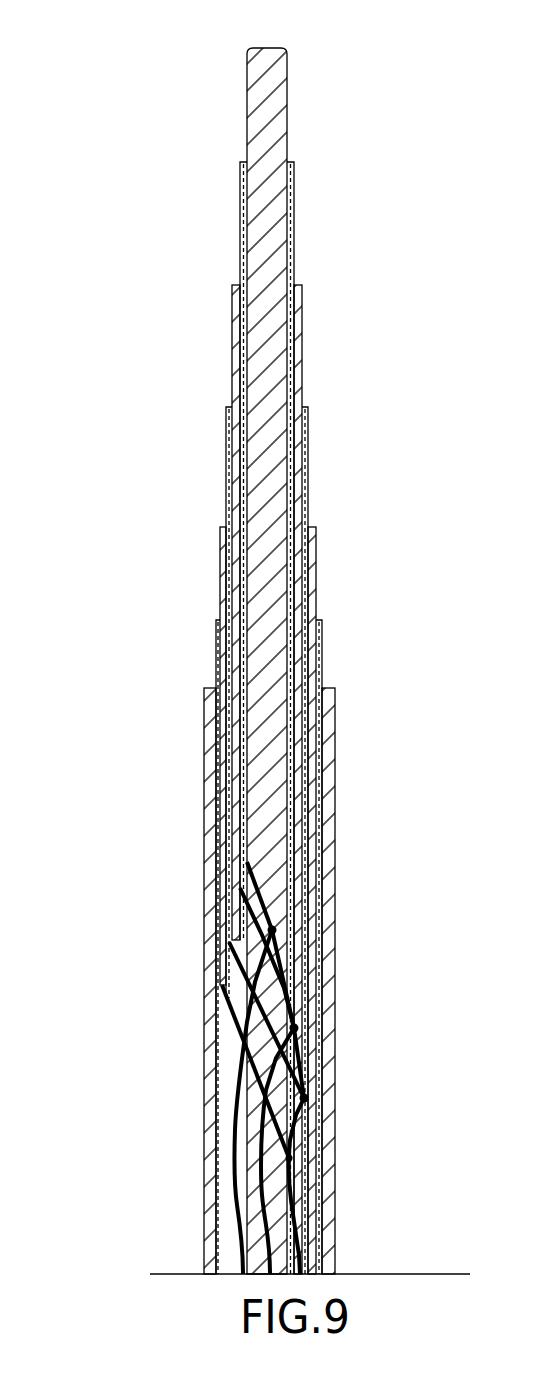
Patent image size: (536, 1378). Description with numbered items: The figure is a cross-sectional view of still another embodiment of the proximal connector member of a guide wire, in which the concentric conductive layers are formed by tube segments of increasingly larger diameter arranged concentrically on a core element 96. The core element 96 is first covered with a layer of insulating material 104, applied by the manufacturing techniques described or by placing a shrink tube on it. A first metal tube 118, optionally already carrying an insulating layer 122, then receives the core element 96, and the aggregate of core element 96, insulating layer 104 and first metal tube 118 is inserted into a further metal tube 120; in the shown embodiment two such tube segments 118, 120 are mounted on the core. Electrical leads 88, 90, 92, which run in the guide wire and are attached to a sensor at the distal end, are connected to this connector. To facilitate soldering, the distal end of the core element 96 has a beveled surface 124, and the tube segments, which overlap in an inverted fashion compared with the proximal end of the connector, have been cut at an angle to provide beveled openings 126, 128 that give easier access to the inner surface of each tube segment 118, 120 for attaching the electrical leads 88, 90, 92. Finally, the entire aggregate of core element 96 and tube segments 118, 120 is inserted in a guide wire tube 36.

The core element 96 is at (268, 48).
The insulating layer 104 is at (240, 196).
The first metal tube 118 is at (233, 348).
The insulating layer 122 is at (228, 468).
The further metal tube 120 is at (222, 576).
The guide wire tube 36 is at (330, 873).
The beveled surface 124 is at (255, 908).
The beveled opening 126 is at (246, 943).
The beveled opening 128 is at (243, 989).
The electrical lead 88 is at (233, 1131).
The electrical lead 90 is at (265, 1188).
The electrical lead 92 is at (302, 1238).